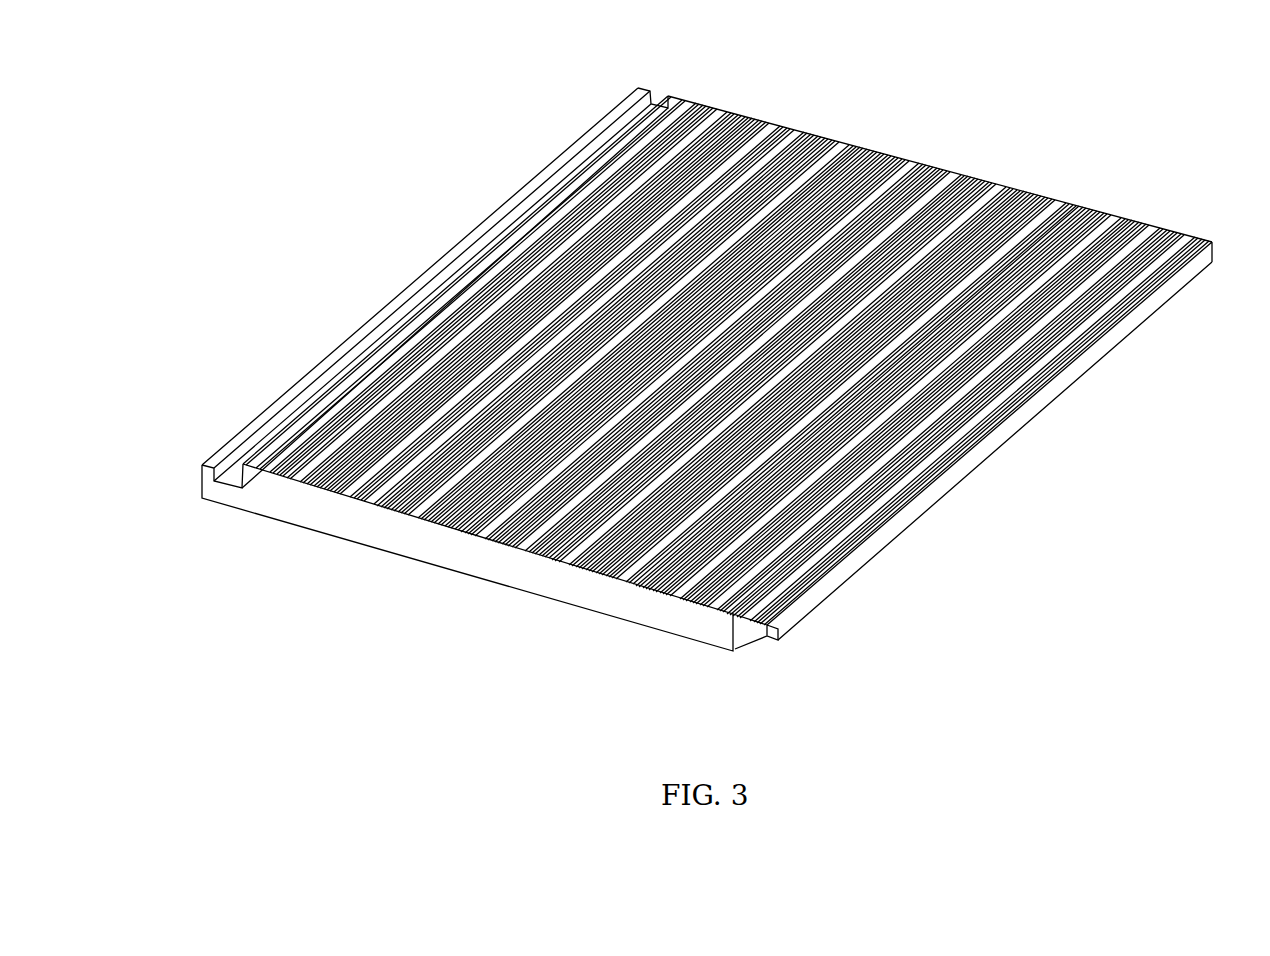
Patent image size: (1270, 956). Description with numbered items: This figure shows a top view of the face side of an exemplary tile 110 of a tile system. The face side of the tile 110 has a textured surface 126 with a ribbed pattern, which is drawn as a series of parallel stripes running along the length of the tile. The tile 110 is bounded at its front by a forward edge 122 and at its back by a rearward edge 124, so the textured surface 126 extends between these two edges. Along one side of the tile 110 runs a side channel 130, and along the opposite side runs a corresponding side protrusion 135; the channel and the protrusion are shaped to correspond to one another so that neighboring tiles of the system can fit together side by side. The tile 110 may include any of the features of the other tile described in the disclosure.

The tile 110 is at (342, 117).
The forward edge 122 is at (460, 557).
The rearward edge 124 is at (988, 170).
The textured surface 126 is at (1037, 357).
The side channel 130 is at (222, 480).
The side protrusion 135 is at (797, 613).